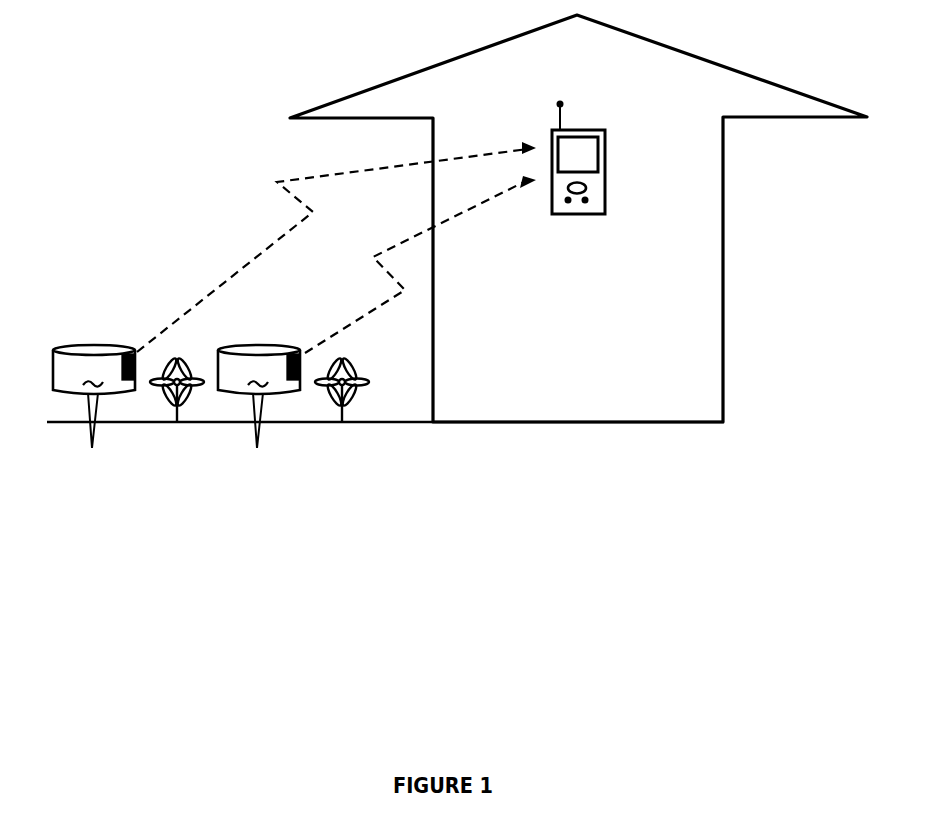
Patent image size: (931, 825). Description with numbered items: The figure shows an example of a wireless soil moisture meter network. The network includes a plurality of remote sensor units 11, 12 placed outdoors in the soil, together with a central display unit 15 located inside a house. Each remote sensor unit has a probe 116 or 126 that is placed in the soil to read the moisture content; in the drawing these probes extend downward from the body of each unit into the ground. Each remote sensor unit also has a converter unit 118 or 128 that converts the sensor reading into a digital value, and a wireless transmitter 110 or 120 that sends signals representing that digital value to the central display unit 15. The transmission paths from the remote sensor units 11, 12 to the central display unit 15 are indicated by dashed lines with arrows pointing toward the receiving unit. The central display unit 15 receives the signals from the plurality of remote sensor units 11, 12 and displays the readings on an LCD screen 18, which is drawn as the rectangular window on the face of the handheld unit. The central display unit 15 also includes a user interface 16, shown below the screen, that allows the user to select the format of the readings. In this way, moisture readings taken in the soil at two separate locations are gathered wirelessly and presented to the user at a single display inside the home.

The remote sensor unit 11 is at (94, 370).
The remote sensor unit 12 is at (259, 370).
The central display unit 15 is at (616, 176).
The user interface 16 is at (596, 191).
The LCD screen 18 is at (603, 146).
The wireless transmitter 110 is at (101, 379).
The probe 116 is at (100, 438).
The converter unit 118 is at (62, 340).
The wireless transmitter 120 is at (267, 379).
The probe 126 is at (265, 438).
The converter unit 128 is at (237, 340).